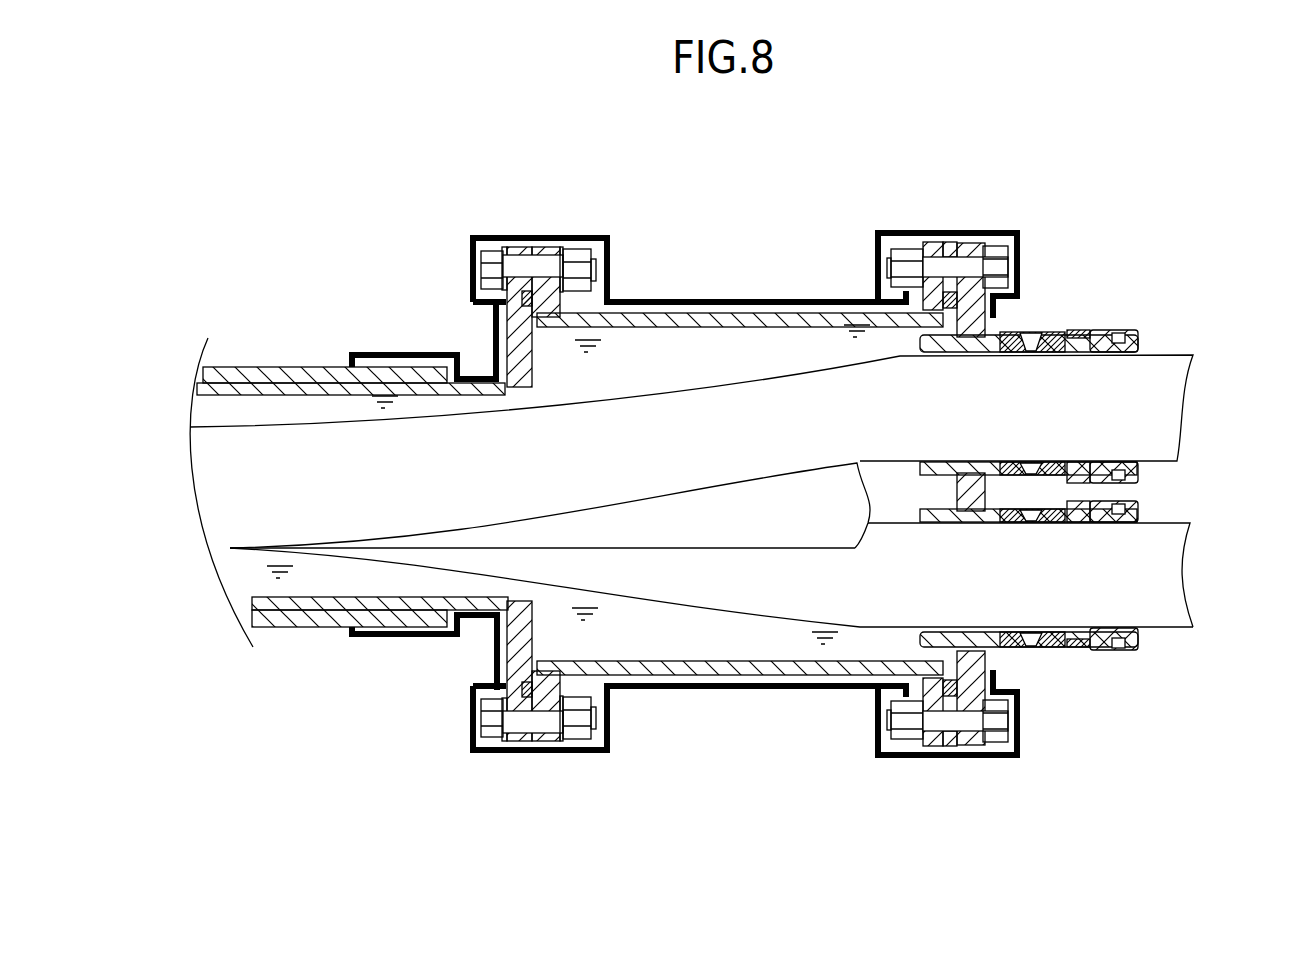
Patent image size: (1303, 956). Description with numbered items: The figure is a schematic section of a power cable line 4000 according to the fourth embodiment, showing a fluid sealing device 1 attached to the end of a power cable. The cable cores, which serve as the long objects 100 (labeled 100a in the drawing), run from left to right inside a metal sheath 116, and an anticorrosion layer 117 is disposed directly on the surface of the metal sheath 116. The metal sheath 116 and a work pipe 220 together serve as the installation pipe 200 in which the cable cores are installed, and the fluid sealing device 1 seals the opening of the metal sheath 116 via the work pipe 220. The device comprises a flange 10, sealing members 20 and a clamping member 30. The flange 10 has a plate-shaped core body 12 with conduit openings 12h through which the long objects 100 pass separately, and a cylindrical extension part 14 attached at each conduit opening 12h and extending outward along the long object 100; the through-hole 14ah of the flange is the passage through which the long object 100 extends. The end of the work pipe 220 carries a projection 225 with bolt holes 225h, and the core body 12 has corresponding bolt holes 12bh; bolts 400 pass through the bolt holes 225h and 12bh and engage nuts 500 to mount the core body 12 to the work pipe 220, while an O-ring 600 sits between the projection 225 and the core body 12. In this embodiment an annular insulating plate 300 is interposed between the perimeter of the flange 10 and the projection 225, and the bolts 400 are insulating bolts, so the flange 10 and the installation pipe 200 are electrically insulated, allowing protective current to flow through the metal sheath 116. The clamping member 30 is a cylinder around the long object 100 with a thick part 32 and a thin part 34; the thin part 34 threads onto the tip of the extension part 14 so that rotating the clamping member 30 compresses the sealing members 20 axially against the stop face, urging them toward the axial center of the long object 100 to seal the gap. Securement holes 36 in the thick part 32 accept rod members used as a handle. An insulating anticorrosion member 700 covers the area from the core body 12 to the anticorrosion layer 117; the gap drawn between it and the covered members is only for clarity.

The fluid sealing device 1 is at (709, 435).
The power cable line 4000 is at (294, 254).
The flange 10 is at (1028, 512).
The core body 12 is at (954, 512).
The conduit opening 12h is at (958, 648).
The bolt hole 12bh is at (992, 750).
The extension part 14 is at (1070, 473).
The through-hole 14ah is at (982, 632).
The sealing member 20 is at (1030, 331).
The clamping member 30 is at (1117, 458).
The thick part 32 is at (1105, 330).
The thin part 34 is at (1078, 330).
The securement hole 36 is at (1117, 657).
The long object 100 is at (691, 443).
The hose body 100a is at (668, 575).
The metal sheath 116 is at (413, 383).
The anticorrosion layer 117 is at (343, 367).
The installation pipe 200 is at (663, 544).
The work pipe 220 is at (787, 313).
The projection 225 is at (928, 517).
The bolt hole 225h is at (890, 752).
The insulating plate 300 is at (957, 250).
The bolt 400 is at (997, 252).
The nut 500 is at (905, 250).
The O-ring 600 is at (936, 262).
The anticorrosion member 700 is at (597, 235).